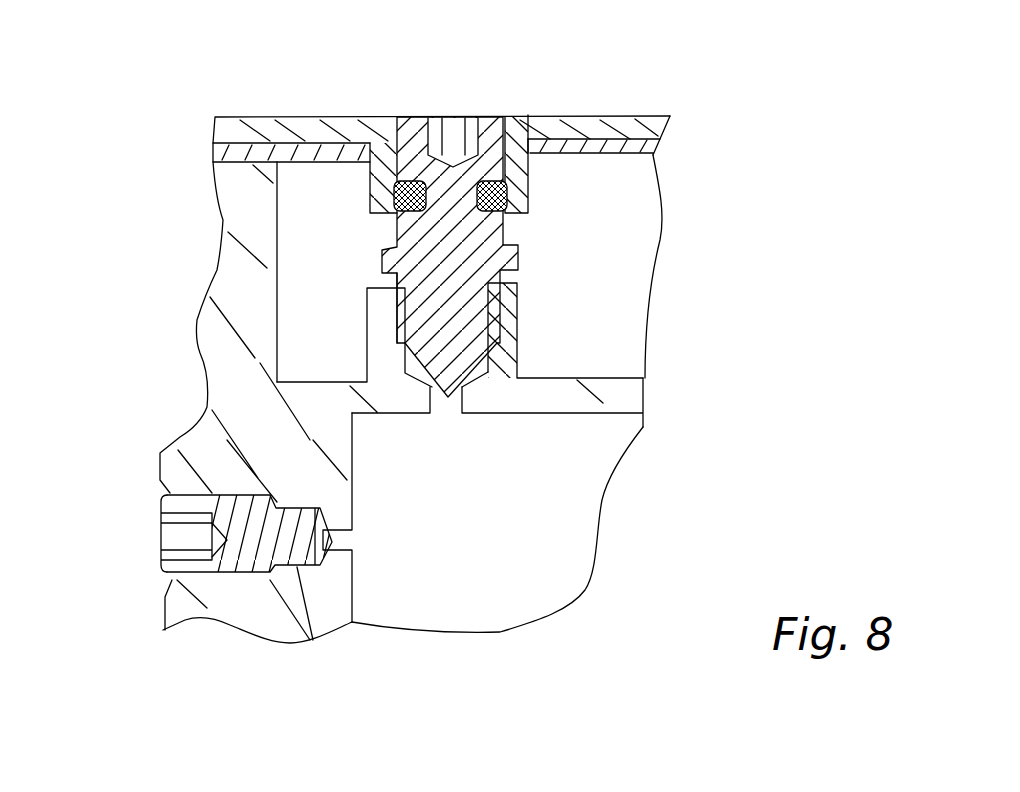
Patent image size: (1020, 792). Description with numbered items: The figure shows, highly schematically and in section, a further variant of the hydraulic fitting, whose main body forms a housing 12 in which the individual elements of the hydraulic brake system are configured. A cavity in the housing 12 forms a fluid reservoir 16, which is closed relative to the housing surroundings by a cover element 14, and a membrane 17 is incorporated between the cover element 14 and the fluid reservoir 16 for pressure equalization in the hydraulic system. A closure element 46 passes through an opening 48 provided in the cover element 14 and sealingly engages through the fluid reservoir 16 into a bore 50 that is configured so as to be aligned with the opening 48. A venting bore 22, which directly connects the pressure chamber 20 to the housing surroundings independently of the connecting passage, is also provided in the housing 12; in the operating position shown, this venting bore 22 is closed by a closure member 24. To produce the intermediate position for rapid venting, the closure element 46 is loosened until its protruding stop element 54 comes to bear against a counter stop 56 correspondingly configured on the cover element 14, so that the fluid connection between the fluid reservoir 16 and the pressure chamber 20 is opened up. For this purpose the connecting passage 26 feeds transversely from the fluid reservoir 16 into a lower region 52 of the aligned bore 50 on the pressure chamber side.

The housing 12 is at (210, 393).
The cover element 14 is at (588, 133).
The fluid reservoir 16 is at (615, 279).
The membrane 17 is at (662, 126).
The pressure chamber 20 is at (508, 539).
The venting bore 22 is at (287, 568).
The closure member 24 is at (162, 510).
The connecting passage 26 is at (517, 343).
The closure element 46 is at (420, 147).
The opening 48 is at (504, 125).
The bore 50 is at (413, 343).
The lower region 52 is at (510, 407).
The stop element 54 is at (308, 162).
The counter stop 56 is at (397, 247).